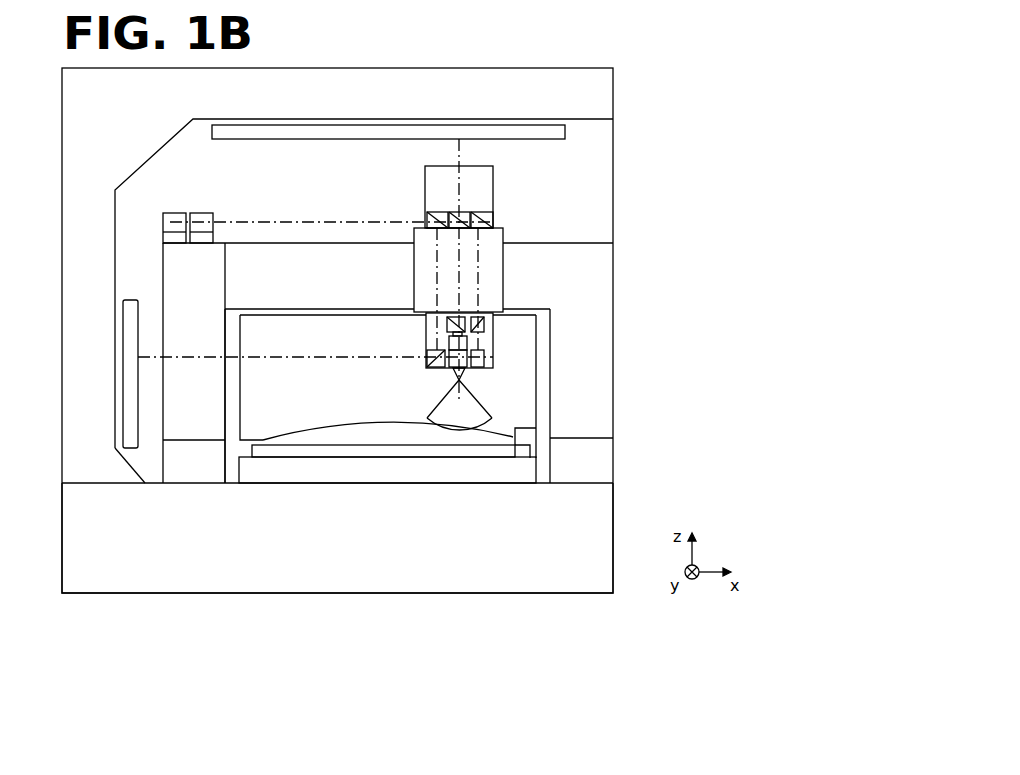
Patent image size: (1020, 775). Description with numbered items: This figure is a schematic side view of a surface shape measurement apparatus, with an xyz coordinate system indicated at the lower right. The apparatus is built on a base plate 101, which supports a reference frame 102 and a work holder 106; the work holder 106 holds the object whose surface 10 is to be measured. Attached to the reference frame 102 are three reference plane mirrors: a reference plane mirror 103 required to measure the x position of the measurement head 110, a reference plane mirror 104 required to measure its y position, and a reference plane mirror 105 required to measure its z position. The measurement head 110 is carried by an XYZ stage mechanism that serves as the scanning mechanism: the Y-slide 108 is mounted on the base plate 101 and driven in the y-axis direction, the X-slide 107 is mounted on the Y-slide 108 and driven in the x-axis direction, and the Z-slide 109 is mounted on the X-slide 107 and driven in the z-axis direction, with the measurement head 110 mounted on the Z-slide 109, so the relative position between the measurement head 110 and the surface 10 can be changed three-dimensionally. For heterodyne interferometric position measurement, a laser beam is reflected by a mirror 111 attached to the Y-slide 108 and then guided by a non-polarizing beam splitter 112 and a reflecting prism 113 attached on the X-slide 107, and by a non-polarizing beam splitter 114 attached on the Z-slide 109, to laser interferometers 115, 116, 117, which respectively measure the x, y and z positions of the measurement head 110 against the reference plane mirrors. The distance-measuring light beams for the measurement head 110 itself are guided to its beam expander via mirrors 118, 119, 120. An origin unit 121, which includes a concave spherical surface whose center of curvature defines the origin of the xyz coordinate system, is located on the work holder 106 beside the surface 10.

The surface to be measured 10 is at (340, 432).
The base plate 101 is at (99, 568).
The reference frame 102 is at (560, 83).
The reference plane mirror 103 is at (132, 307).
The reference plane mirror 104 is at (523, 378).
The reference plane mirror 105 is at (553, 131).
The work holder 106 is at (377, 468).
The X-slide 107 is at (490, 262).
The Y-slide 108 is at (193, 462).
The Z-slide 109 is at (487, 175).
The measurement head 110 is at (450, 340).
The mirror 111 is at (203, 213).
The non-polarizing beam splitter 112 is at (427, 212).
The reflecting prism 113 is at (493, 213).
The non-polarizing beam splitter 114 is at (533, 308).
The laser interferometer 115 is at (447, 368).
The laser interferometer 116 is at (483, 357).
The laser interferometer 117 is at (448, 317).
The mirror 118 is at (176, 213).
The mirror 119 is at (448, 212).
The mirror 120 is at (448, 370).
The origin unit 121 is at (528, 435).